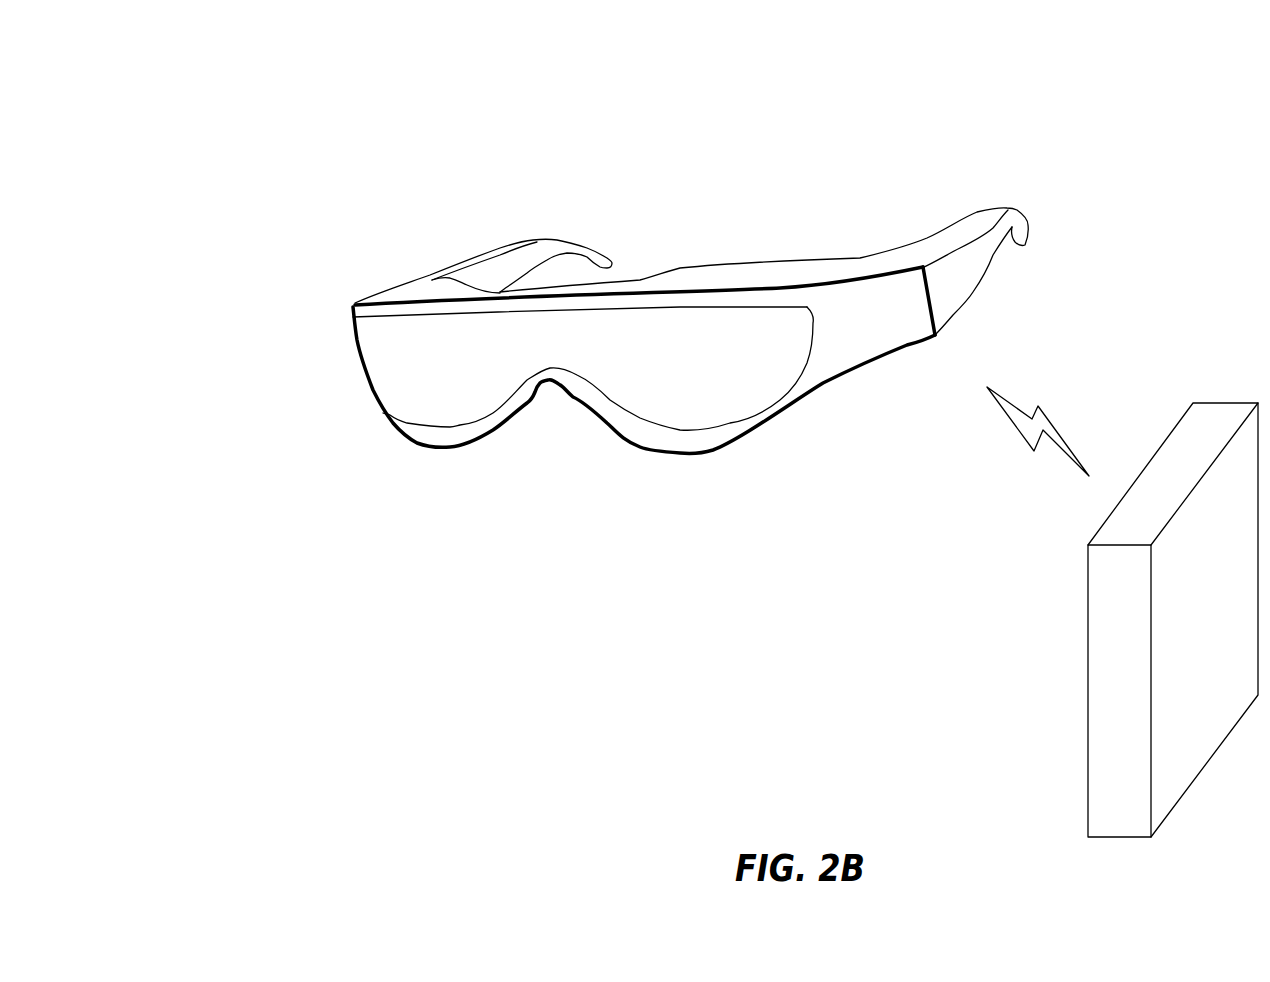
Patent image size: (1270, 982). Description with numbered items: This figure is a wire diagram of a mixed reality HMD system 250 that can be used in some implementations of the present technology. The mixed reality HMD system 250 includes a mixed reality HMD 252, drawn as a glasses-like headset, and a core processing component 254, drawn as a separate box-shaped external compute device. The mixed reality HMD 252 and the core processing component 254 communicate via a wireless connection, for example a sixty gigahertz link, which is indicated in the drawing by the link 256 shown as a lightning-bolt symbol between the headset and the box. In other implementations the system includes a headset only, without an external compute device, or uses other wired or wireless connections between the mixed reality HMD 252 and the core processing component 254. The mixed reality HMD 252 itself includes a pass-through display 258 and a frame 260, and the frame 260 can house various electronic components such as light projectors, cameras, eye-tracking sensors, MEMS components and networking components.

The mixed reality HMD system 250 is at (332, 134).
The mixed reality HMD 252 is at (353, 318).
The core processing component 254 is at (1089, 621).
The link 256 is at (1026, 451).
The pass-through display 258 is at (813, 308).
The frame 260 is at (960, 273).